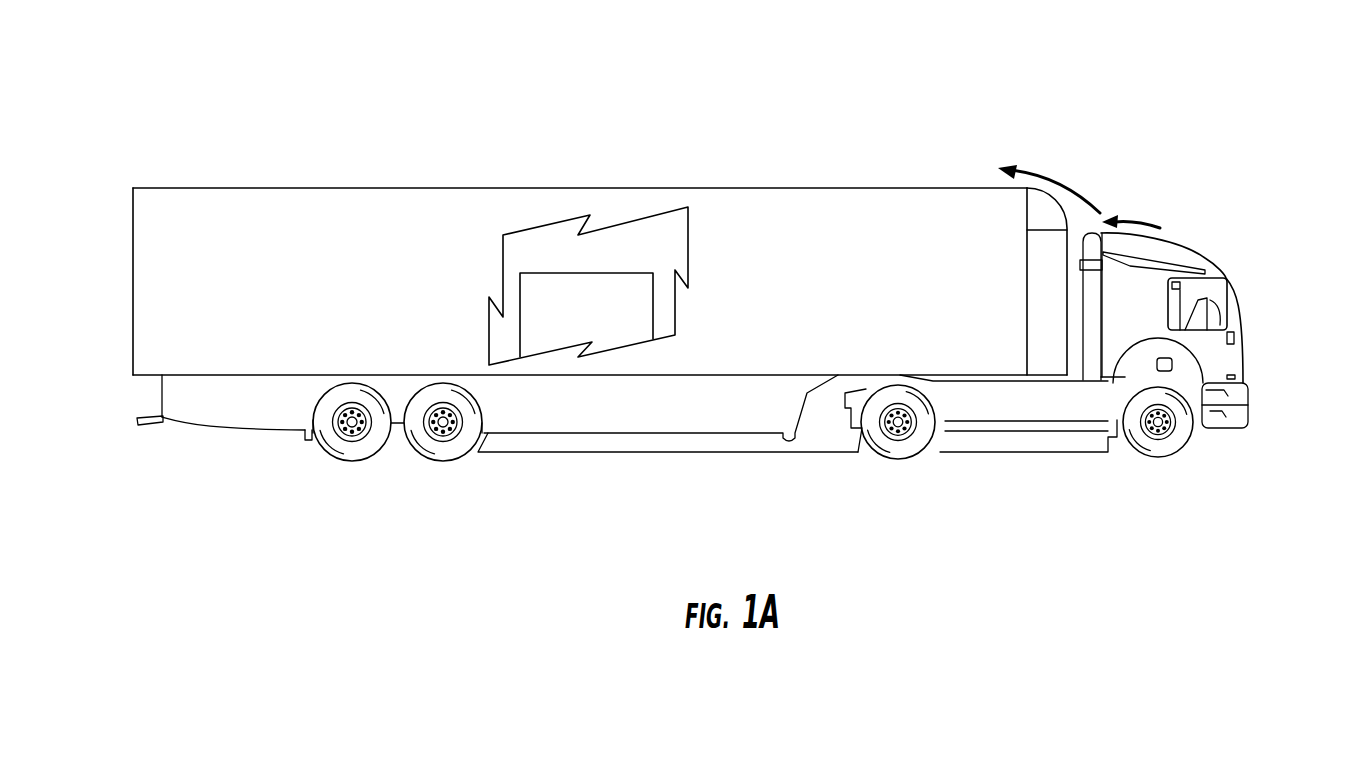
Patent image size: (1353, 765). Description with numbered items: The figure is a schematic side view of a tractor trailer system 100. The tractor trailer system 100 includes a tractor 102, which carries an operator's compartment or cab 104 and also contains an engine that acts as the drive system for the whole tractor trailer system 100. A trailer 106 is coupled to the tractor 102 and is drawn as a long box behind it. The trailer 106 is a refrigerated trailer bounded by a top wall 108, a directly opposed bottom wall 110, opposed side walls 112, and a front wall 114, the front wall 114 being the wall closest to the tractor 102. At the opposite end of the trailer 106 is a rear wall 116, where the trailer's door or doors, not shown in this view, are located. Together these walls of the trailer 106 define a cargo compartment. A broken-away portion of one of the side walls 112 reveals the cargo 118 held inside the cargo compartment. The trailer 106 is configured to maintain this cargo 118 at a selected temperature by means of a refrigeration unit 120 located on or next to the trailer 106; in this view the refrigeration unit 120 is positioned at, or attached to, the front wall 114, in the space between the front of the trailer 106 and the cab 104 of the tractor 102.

The tractor trailer system 100 is at (391, 95).
The tractor 102 is at (1220, 430).
The cab 104 is at (1200, 283).
The trailer 106 is at (257, 197).
The top wall 108 is at (815, 187).
The bottom wall 110 is at (552, 375).
The side walls 112 is at (638, 286).
The front wall 114 is at (1028, 292).
The rear wall 116 is at (132, 225).
The cargo 118 is at (586, 315).
The refrigeration unit 120 is at (1048, 343).